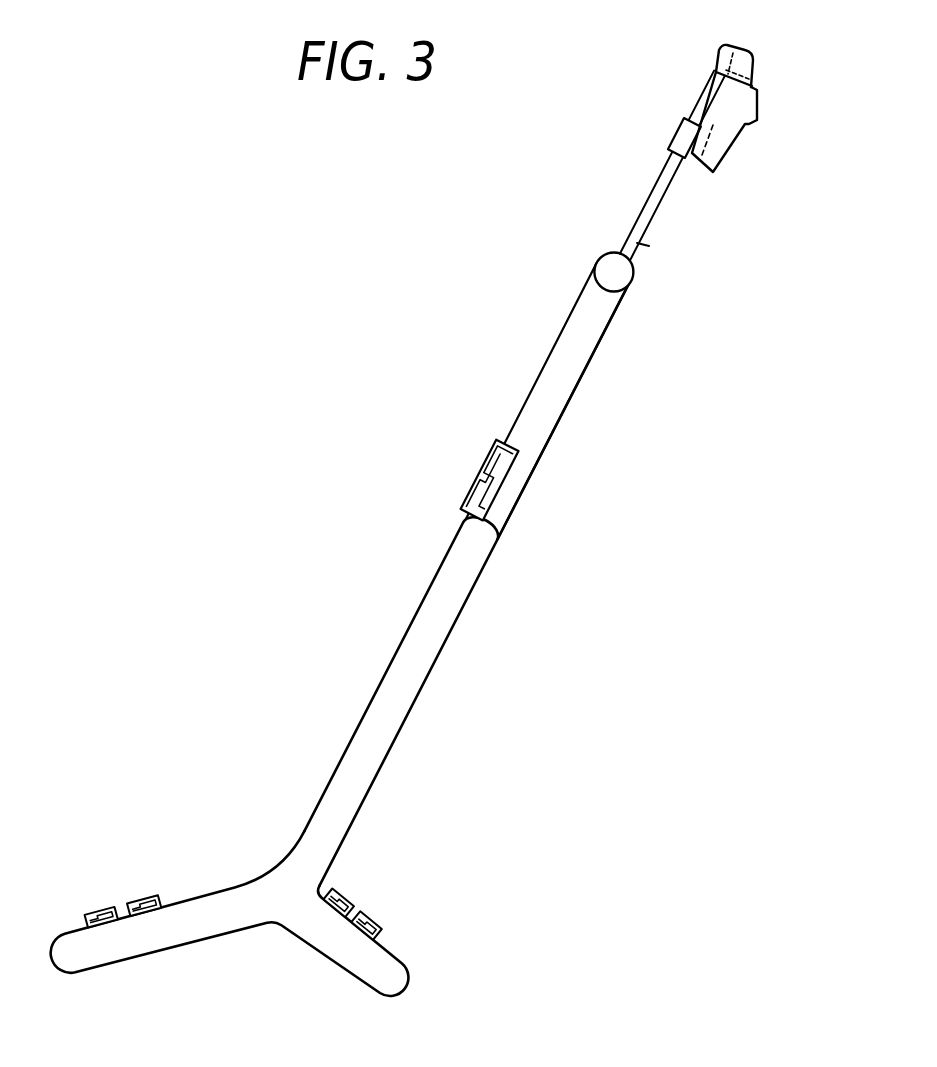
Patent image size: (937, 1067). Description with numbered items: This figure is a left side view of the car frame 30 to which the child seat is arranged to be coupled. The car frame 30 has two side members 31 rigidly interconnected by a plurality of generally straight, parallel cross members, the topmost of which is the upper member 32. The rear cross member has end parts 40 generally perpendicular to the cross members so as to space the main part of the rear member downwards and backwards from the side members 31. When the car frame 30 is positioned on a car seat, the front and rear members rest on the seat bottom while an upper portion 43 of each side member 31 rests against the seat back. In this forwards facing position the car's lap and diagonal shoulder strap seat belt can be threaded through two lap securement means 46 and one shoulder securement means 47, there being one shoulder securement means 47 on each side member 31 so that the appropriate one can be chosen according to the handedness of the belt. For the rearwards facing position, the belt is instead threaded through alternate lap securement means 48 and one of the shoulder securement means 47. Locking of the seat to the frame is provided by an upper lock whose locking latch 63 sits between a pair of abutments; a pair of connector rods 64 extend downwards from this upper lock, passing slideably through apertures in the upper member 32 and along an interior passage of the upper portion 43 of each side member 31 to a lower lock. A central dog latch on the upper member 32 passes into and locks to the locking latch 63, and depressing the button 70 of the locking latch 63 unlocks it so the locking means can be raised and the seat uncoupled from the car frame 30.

The car frame 30 is at (524, 370).
The side member 31 is at (548, 532).
The upper member 32 is at (632, 265).
The end part 40 is at (350, 948).
The upper portion 43 is at (610, 322).
The lap securement means 46 is at (102, 910).
The shoulder securement means 47 is at (460, 500).
The alternate lap securement means 48 is at (371, 926).
The locking latch 63 is at (732, 143).
The connector rod 64 is at (652, 197).
The button 70 is at (755, 92).